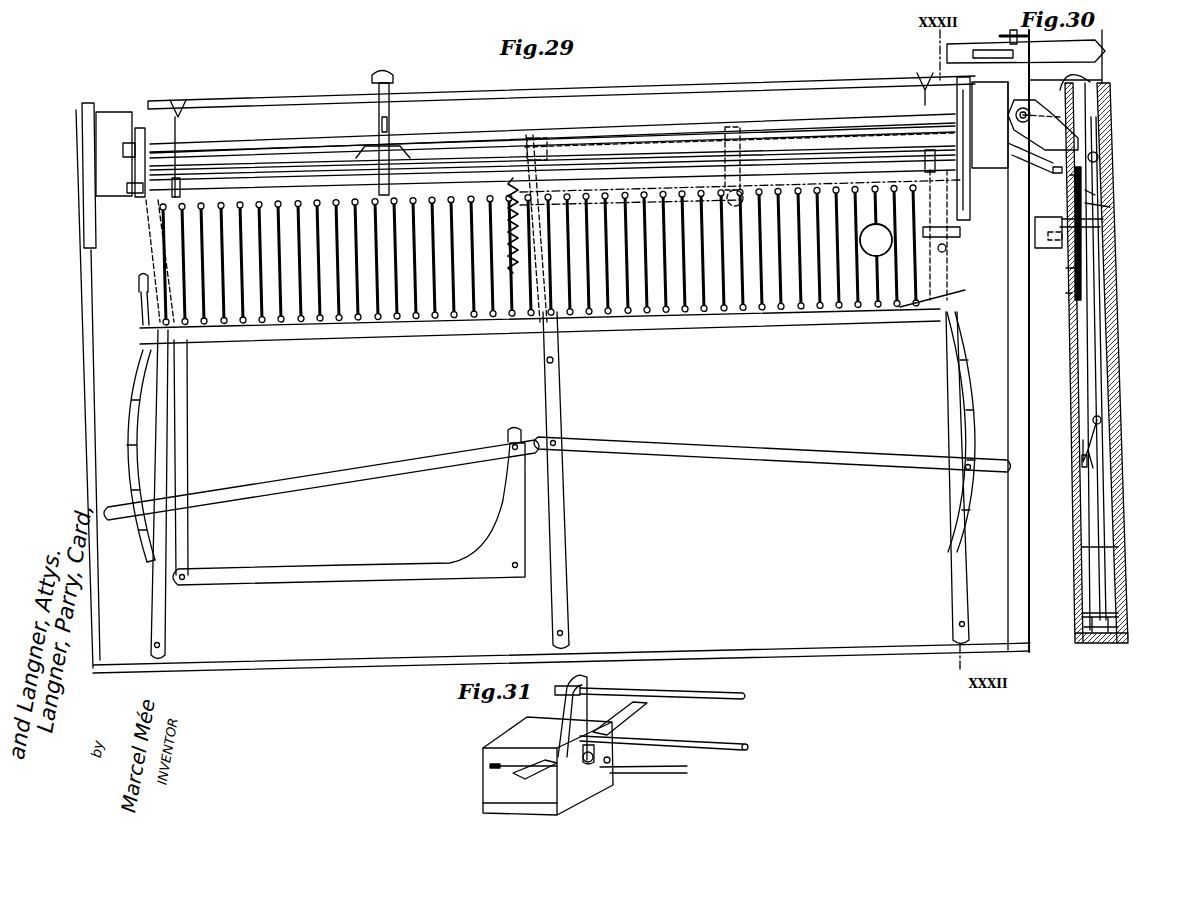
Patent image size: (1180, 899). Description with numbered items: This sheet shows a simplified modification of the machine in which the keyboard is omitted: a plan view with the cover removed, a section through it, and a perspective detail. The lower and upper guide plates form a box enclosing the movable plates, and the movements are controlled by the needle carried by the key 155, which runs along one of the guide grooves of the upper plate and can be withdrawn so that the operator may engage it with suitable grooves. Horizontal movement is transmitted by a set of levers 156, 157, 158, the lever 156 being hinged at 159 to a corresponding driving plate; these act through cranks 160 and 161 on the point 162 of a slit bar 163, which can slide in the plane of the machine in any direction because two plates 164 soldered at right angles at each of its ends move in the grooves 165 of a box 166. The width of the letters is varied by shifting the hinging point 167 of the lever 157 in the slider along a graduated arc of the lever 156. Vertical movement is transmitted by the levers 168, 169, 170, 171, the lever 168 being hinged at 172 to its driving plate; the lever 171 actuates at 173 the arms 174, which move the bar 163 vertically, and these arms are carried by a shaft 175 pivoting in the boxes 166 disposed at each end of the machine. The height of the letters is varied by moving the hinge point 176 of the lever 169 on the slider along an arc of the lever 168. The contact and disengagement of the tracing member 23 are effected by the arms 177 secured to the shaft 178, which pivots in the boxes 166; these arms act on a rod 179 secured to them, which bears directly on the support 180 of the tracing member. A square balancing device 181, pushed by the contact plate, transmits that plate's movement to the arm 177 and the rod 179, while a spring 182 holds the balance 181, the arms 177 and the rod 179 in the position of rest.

In FIG. 29, the tracing member 23 is at (372, 80).
In FIG. 30, the tracing member 23 is at (1005, 40).
In FIG. 29, the key 155 is at (876, 240).
In FIG. 30, the key 155 is at (1044, 235).
In FIG. 29, the lever 156 is at (953, 521).
In FIG. 30, the lever 156 is at (1096, 590).
In FIG. 29, the lever 157 is at (729, 450).
In FIG. 30, the lever 157 is at (1100, 447).
In FIG. 29, the lever 158 is at (548, 427).
In FIG. 30, the lever 158 is at (1098, 394).
In FIG. 29, the hinge 159 is at (948, 251).
In FIG. 29, the crank 160 is at (613, 160).
In FIG. 29, the crank 161 is at (645, 300).
In FIG. 29, the point 162 is at (730, 127).
In FIG. 29, the slit bar 163 is at (827, 132).
In FIG. 30, the slit bar 163 is at (1083, 128).
In FIG. 31, the slit bar 163 is at (726, 743).
In FIG. 29, the plate 164 is at (88, 145).
In FIG. 30, the plate 164 is at (1053, 170).
In FIG. 31, the plate 164 is at (634, 708).
In FIG. 29, the groove 165 is at (113, 110).
In FIG. 31, the groove 165 is at (490, 767).
In FIG. 31, the box 166 is at (510, 744).
In FIG. 29, the hinging point 167 is at (963, 469).
In FIG. 30, the hinging point 167 is at (1105, 466).
In FIG. 29, the lever 168 is at (147, 558).
In FIG. 29, the lever 169 is at (384, 467).
In FIG. 29, the lever 170 is at (377, 580).
In FIG. 29, the lever 171 is at (178, 480).
In FIG. 29, the hinge 172 is at (139, 283).
In FIG. 29, the actuating point 173 is at (127, 188).
In FIG. 29, the arm 174 is at (141, 142).
In FIG. 31, the arm 174 is at (582, 712).
In FIG. 29, the shaft 175 is at (279, 146).
In FIG. 31, the shaft 175 is at (712, 694).
In FIG. 29, the hinge point 176 is at (137, 496).
In FIG. 29, the arm 177 is at (180, 104).
In FIG. 29, the shaft 178 is at (182, 188).
In FIG. 30, the shaft 178 is at (1099, 157).
In FIG. 29, the rod 179 is at (603, 88).
In FIG. 30, the rod 179 is at (1104, 52).
In FIG. 29, the support 180 is at (378, 114).
In FIG. 29, the square balancing device 181 is at (960, 230).
In FIG. 30, the square balancing device 181 is at (1060, 237).
In FIG. 29, the spring 182 is at (512, 176).